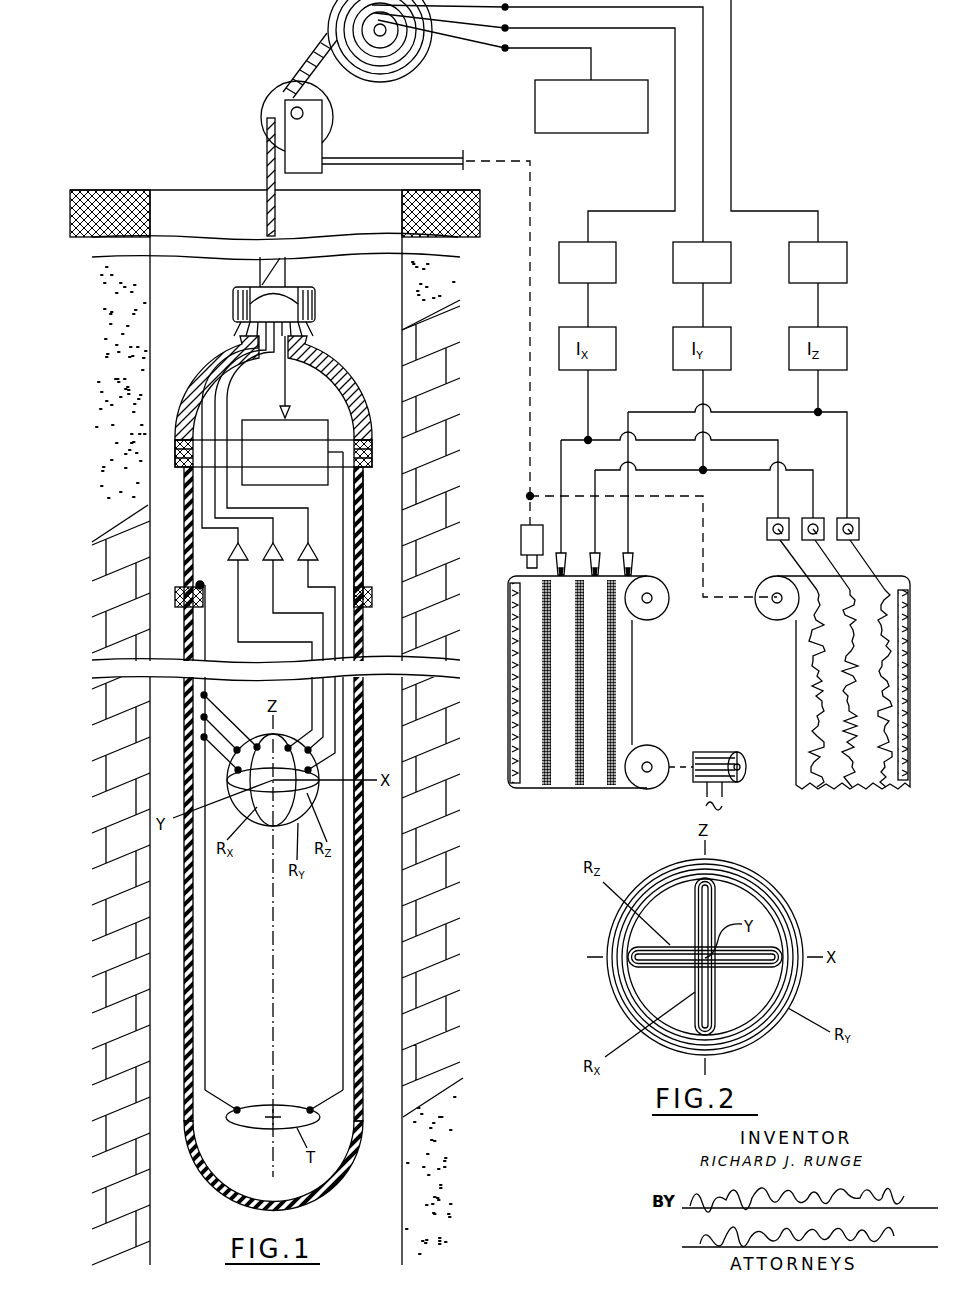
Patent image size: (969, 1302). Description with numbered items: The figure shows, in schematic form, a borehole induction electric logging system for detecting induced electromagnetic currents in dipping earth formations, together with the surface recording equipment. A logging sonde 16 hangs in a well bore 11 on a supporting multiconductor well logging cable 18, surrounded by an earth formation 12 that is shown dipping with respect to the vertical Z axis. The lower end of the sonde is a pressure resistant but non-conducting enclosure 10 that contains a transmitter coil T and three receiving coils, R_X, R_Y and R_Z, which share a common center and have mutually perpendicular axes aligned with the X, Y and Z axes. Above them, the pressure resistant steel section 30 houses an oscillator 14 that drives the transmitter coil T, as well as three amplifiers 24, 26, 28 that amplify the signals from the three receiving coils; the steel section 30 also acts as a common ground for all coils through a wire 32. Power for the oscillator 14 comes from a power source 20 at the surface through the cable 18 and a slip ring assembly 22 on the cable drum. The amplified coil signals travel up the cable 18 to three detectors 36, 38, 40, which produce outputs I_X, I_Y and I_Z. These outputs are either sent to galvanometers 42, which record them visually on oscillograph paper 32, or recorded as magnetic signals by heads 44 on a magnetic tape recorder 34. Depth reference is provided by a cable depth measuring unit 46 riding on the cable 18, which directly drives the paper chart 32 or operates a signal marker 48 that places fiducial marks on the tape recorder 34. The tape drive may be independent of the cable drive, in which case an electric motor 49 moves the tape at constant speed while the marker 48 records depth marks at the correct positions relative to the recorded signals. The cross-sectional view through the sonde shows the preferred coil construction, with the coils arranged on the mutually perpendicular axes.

The pressure resistant non-conducting enclosure 10 is at (367, 1003).
The well bore 11 is at (152, 1200).
The earth formation 12 is at (466, 946).
The oscillator 14 is at (306, 420).
The logging sonde 16 is at (363, 815).
The well logging cable 18 is at (265, 168).
The power source 20 is at (597, 133).
The slip ring assembly 22 is at (420, 62).
The amplifier 24 is at (232, 563).
The amplifier 26 is at (267, 563).
The amplifier 28 is at (302, 563).
The steel section 30 is at (365, 530).
The oscillograph paper 32 is at (343, 955).
The magnetic tape recorder 34 is at (632, 680).
The detector 36 is at (603, 283).
The detector 38 is at (717, 283).
The detector 40 is at (833, 283).
The galvanometers 42 is at (850, 518).
The heads 44 is at (632, 555).
The cable depth measuring unit 46 is at (325, 145).
The signal marker 48 is at (521, 535).
The electric motor 49 is at (713, 752).